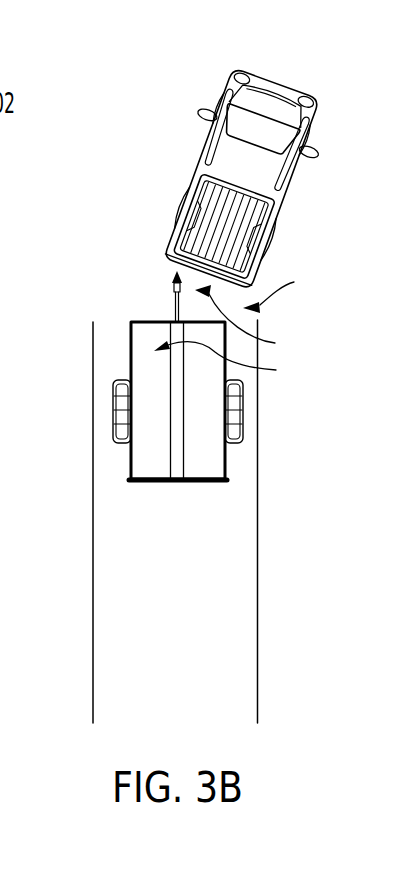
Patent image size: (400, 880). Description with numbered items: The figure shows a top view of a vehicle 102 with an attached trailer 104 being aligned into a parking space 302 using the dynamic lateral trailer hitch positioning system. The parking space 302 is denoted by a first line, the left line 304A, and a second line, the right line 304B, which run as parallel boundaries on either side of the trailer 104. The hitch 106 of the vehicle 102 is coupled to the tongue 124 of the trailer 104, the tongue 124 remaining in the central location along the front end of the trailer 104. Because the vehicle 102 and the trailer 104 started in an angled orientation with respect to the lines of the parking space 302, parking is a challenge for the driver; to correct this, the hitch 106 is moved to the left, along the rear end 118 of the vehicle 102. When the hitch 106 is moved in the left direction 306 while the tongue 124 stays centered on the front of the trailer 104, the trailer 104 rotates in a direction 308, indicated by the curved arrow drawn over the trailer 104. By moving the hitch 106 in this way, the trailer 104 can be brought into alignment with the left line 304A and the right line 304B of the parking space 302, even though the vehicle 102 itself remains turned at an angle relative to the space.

The vehicle 102 is at (322, 110).
The trailer 104 is at (205, 467).
The hitch 106 is at (173, 276).
The rear end 118 is at (286, 288).
The tongue 124 is at (175, 306).
The parking space 302 is at (185, 521).
The first line (left line) 304A is at (92, 583).
The second line (right line) 304B is at (258, 573).
The left direction 306 is at (252, 321).
The direction 308 is at (231, 363).